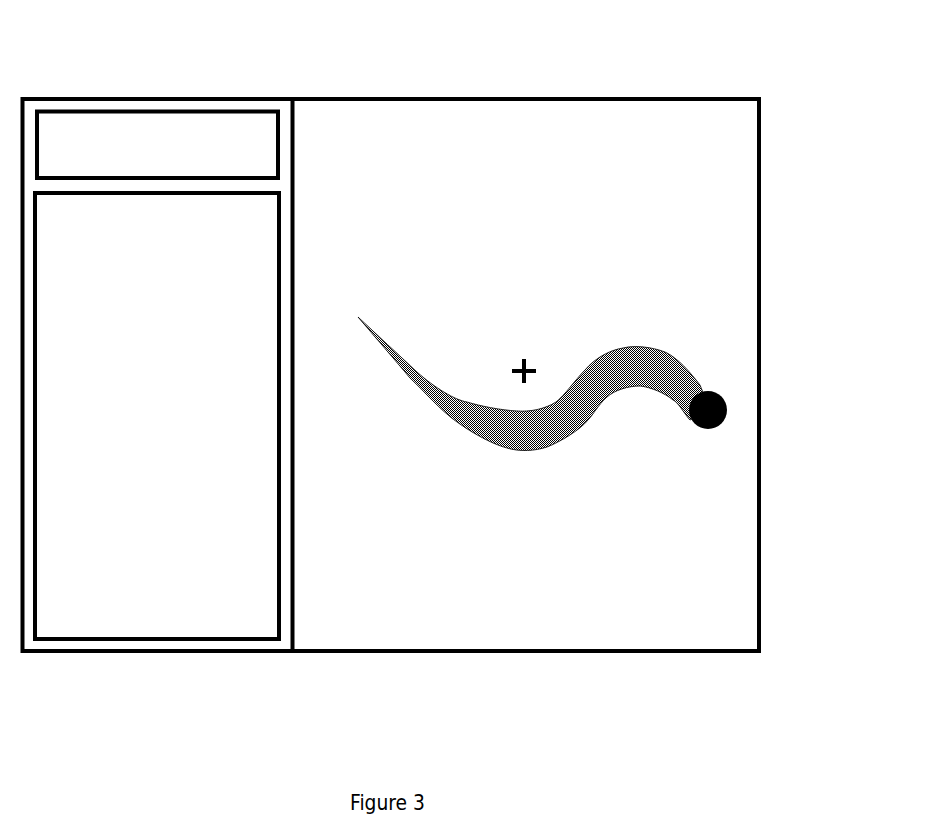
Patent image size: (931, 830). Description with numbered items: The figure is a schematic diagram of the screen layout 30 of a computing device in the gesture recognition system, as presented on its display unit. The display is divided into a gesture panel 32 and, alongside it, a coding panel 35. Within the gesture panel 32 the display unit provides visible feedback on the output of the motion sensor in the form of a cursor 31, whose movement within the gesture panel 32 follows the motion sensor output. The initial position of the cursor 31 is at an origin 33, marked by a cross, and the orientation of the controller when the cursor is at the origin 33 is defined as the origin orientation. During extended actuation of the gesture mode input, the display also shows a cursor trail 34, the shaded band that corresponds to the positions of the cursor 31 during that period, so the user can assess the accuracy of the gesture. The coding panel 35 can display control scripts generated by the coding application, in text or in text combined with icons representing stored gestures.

The screen layout 30 is at (470, 85).
The cursor 31 is at (722, 420).
The gesture panel 32 is at (672, 652).
The origin 33 is at (530, 363).
The cursor trail 34 is at (513, 450).
The coding panel 35 is at (147, 640).